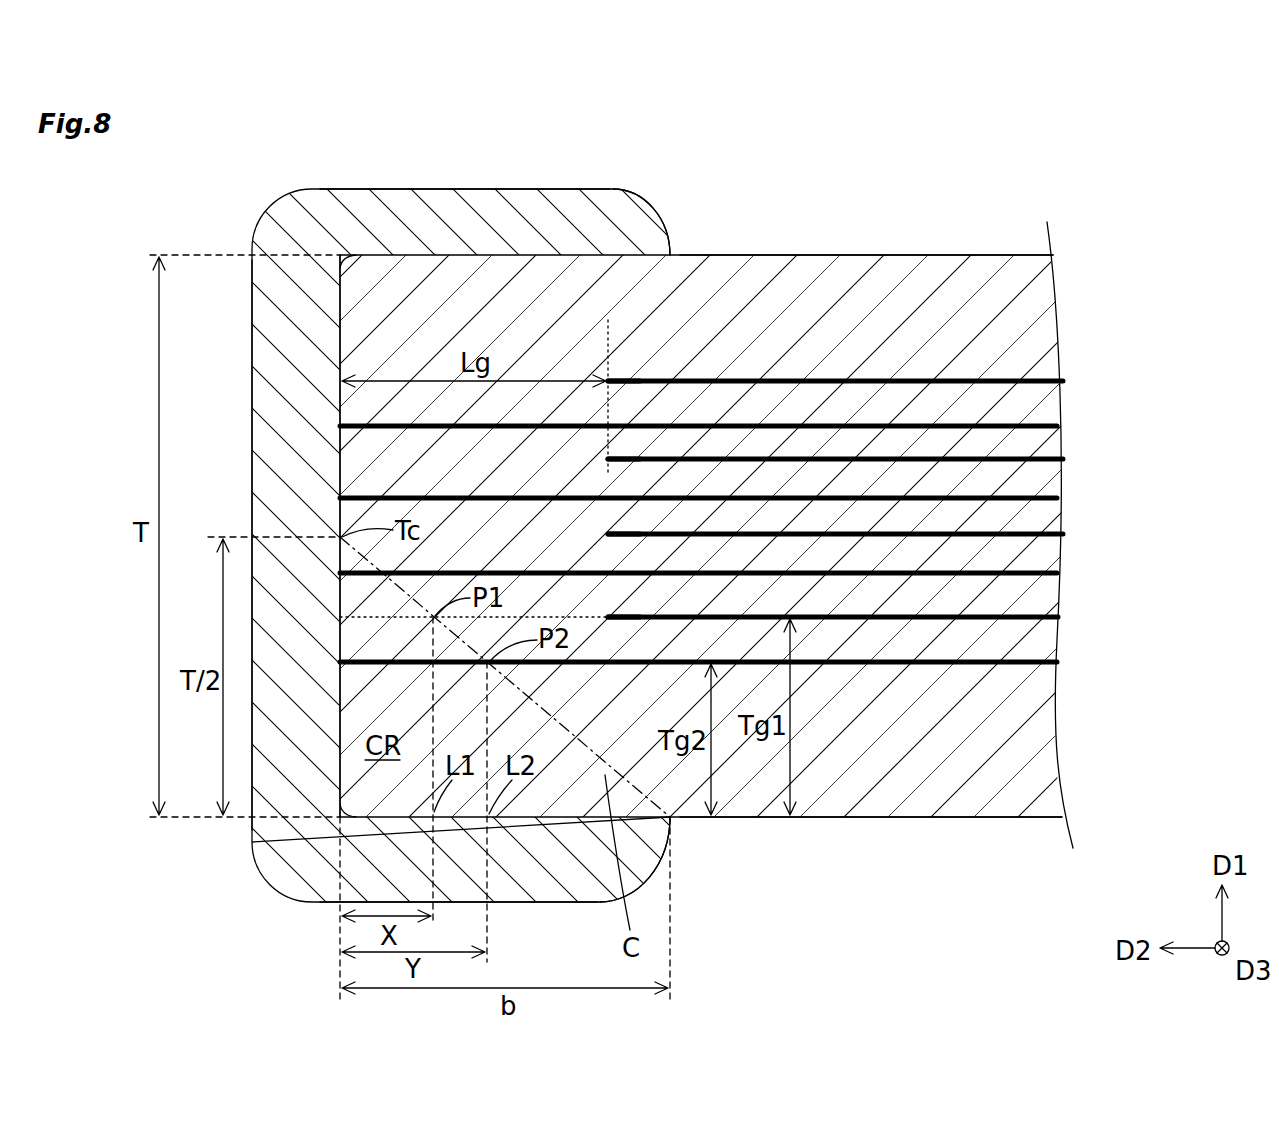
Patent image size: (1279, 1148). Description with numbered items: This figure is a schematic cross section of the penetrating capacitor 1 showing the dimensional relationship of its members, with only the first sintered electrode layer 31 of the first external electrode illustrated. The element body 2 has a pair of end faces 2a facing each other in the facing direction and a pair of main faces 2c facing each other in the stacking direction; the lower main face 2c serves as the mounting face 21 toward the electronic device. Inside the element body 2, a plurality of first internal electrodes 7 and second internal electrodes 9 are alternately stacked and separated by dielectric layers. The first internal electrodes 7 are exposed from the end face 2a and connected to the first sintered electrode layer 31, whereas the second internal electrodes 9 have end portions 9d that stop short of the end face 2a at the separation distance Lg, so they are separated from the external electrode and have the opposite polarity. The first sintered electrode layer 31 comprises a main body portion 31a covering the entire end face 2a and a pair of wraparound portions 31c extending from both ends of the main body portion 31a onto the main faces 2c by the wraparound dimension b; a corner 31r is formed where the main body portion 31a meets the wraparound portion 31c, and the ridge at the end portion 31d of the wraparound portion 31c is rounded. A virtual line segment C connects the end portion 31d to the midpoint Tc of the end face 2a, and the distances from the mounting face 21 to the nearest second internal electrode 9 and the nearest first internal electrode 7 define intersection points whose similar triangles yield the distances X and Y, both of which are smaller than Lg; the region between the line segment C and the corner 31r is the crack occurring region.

The penetrating capacitor 1 is at (1080, 222).
The element body 2 is at (991, 250).
The end face 2a is at (338, 402).
The main face 2c is at (903, 250).
The mounting face 21 is at (988, 820).
The first internal electrode 7 is at (862, 665).
The second internal electrode 9 is at (978, 619).
The end portion 9d is at (608, 617).
The first sintered electrode layer 31 is at (272, 207).
The main body portion 31a is at (275, 455).
The wraparound portion 31c is at (472, 225).
The end portion 31d is at (670, 240).
The corner 31r is at (355, 265).